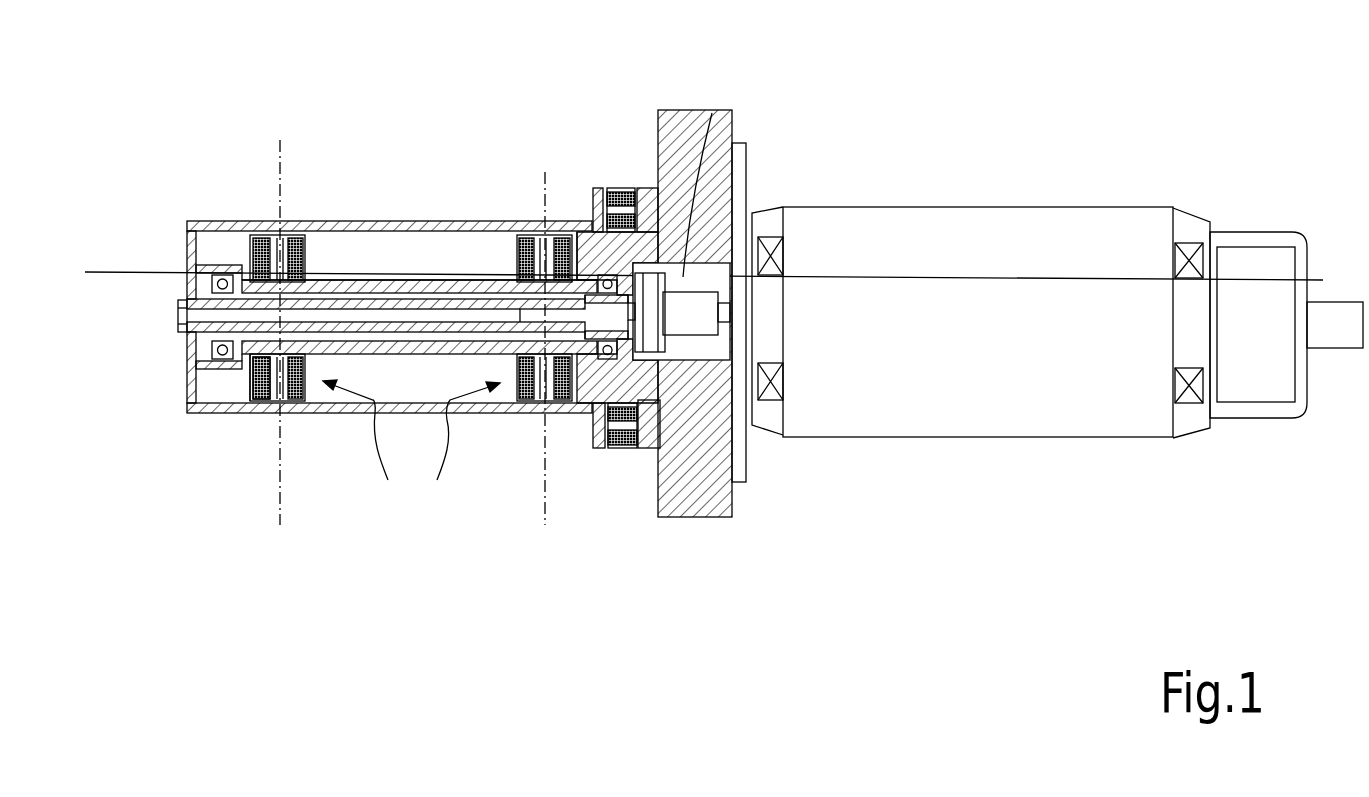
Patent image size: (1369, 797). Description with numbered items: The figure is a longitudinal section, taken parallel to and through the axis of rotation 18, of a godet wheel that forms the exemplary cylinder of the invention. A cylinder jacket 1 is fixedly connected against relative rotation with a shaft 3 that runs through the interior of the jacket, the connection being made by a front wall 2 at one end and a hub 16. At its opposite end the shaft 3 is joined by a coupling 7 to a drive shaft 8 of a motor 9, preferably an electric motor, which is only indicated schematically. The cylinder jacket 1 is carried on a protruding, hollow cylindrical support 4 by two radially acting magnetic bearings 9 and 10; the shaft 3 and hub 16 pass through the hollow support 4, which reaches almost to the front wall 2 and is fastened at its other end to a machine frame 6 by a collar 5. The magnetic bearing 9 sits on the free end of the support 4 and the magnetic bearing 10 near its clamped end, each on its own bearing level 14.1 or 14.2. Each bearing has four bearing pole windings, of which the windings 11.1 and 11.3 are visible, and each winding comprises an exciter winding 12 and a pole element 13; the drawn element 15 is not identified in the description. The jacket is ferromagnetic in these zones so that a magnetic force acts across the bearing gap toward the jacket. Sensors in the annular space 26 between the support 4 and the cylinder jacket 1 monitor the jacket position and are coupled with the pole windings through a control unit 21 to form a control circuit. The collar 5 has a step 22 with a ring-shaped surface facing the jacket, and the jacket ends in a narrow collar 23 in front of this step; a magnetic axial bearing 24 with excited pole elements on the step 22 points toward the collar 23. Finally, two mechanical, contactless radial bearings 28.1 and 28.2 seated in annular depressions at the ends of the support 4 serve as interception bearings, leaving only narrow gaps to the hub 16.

The cylinder jacket 1 is at (237, 222).
The front wall 2 is at (187, 240).
The shaft 3 is at (598, 233).
The support 4 is at (345, 280).
The collar 5 is at (652, 205).
The machine frame 6 is at (678, 127).
The coupling 7 is at (712, 112).
The drive shaft 8 is at (740, 300).
The magnetic bearing 9 is at (853, 95).
The magnetic bearing 10 is at (462, 445).
The bearing pole winding 11.1 is at (288, 237).
The bearing pole winding 11.3 is at (305, 396).
The exciter winding 12 is at (253, 399).
The pole element 13 is at (243, 393).
The bearing level 14.1 is at (282, 517).
The bearing level 14.2 is at (540, 512).
The coil 15 is at (267, 237).
The hub 16 is at (388, 299).
The axis of rotation 18 is at (957, 320).
The control unit 21 is at (1267, 380).
The step 22 is at (660, 420).
The collar 23 is at (600, 448).
The magnetic axial bearing 24 is at (622, 448).
The annular space 26 is at (430, 256).
The radial bearing 28.1 is at (210, 348).
The radial bearing 28.2 is at (607, 358).